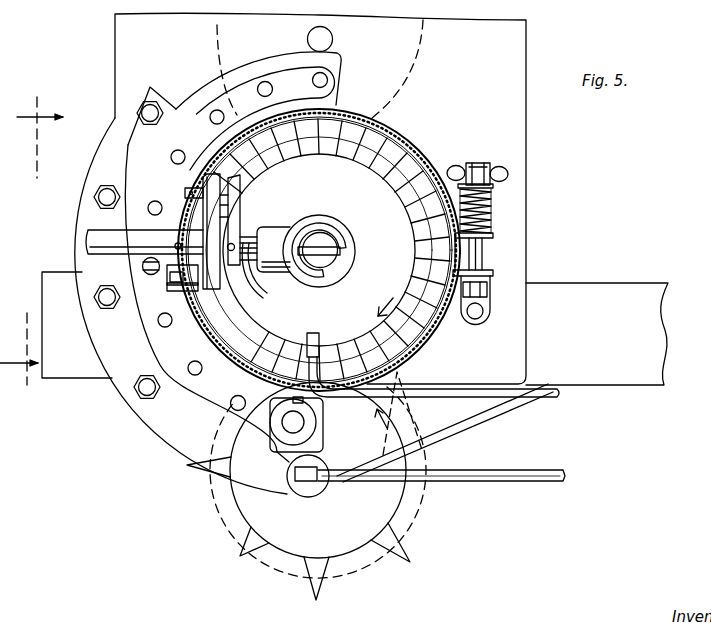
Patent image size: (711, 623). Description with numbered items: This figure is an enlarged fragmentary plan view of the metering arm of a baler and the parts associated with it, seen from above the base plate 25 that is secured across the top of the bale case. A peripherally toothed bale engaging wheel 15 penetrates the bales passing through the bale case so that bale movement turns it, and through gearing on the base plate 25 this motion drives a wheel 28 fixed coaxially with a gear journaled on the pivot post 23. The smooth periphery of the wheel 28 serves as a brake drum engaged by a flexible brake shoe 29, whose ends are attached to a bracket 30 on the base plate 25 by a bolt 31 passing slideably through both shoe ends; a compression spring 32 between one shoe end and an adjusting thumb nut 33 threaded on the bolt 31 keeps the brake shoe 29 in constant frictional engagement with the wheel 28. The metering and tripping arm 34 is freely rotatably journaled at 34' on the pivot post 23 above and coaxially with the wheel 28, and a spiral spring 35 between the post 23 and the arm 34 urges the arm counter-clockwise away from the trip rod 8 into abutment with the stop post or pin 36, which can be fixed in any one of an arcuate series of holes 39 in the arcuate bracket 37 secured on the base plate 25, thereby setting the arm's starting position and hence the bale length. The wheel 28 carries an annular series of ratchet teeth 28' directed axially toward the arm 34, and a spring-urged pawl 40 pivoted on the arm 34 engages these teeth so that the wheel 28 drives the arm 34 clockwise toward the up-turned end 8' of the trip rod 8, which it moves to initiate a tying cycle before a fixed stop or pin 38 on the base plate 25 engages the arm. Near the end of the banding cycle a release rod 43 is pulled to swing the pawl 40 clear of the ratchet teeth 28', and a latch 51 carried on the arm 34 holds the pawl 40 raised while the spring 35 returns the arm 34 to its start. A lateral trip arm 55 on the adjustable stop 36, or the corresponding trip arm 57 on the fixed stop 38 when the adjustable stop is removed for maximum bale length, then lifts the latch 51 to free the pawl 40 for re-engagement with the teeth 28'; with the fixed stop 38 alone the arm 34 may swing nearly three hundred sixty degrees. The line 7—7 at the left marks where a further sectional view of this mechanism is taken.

The section line 7- 7 is at (31, 239).
The trip rod 8 is at (441, 493).
The up-turned end of trip rod 8' is at (294, 494).
The peripherally toothed wheel 15 is at (306, 486).
The pivot post 23 is at (325, 238).
The base plate 25 is at (515, 43).
The wheel 28 is at (329, 250).
The ratchet teeth 28' is at (424, 329).
The flexible brake shoe 29 is at (404, 148).
The bracket 30 is at (492, 280).
The bolt 31 is at (484, 252).
The compression spring 32 is at (487, 213).
The adjusting thumb nut 33 is at (508, 172).
The metering and tripping arm 34 is at (153, 236).
The journal 34' is at (318, 249).
The spiral spring 35 is at (349, 246).
The stop post or pin 36 is at (145, 277).
The arcuate bracket 37 is at (187, 320).
The fixed stop or pin 38 is at (304, 424).
The holes 39 is at (171, 157).
The pawl 40 is at (205, 322).
The release rod 43 is at (312, 352).
The latch 51 is at (177, 288).
The trip arm 55 is at (140, 263).
The trip arm 57 is at (313, 400).